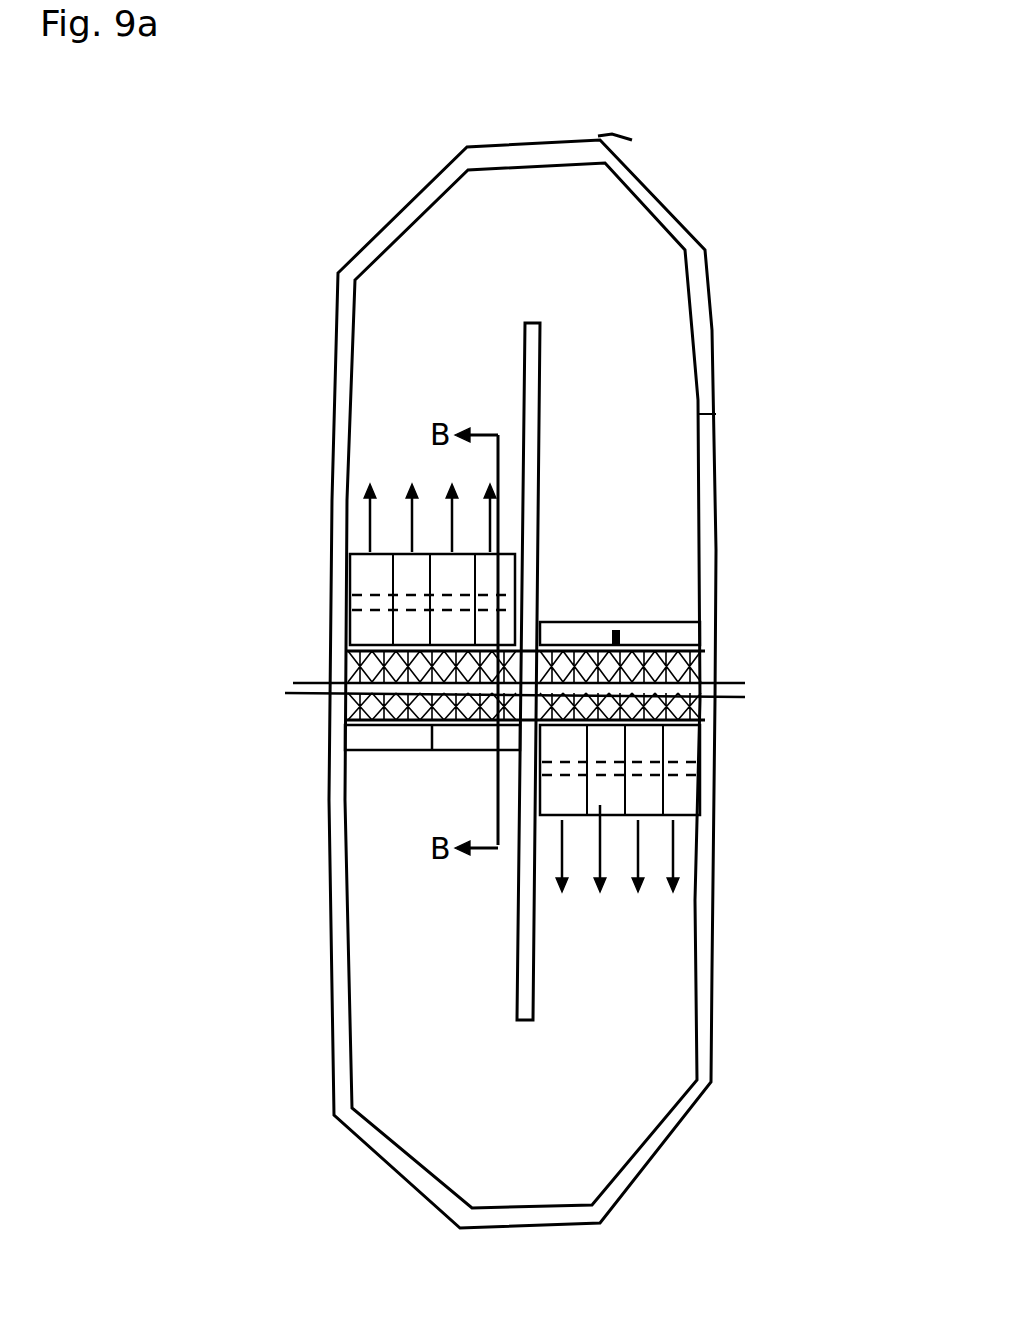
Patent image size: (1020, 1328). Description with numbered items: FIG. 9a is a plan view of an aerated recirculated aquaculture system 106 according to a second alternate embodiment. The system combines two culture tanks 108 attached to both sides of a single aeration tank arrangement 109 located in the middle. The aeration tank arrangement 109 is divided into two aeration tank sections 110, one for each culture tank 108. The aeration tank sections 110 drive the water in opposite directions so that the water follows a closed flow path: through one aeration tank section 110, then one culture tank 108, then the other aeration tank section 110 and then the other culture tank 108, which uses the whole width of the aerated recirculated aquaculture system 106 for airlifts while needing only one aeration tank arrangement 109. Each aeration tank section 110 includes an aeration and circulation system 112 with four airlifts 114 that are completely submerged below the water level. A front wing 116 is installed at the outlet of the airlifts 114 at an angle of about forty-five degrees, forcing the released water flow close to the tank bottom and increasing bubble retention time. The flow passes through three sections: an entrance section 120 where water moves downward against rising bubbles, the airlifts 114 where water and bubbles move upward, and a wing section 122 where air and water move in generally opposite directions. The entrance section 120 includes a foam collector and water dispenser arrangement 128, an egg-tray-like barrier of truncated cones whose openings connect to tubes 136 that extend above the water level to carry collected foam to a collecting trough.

The aerated recirculated aquaculture system 106 is at (153, 246).
The culture tank 108 is at (703, 968).
The aeration tank arrangement 109 is at (275, 657).
The aeration tank section 110 is at (345, 703).
The aeration and circulation system 112 is at (345, 710).
The airlift 114 is at (345, 626).
The front wing 116 is at (445, 550).
The entrance section 120 is at (345, 712).
The wing section 122 is at (350, 563).
The foam collector and water dispenser arrangement 128 is at (628, 623).
The tube 136 is at (703, 682).